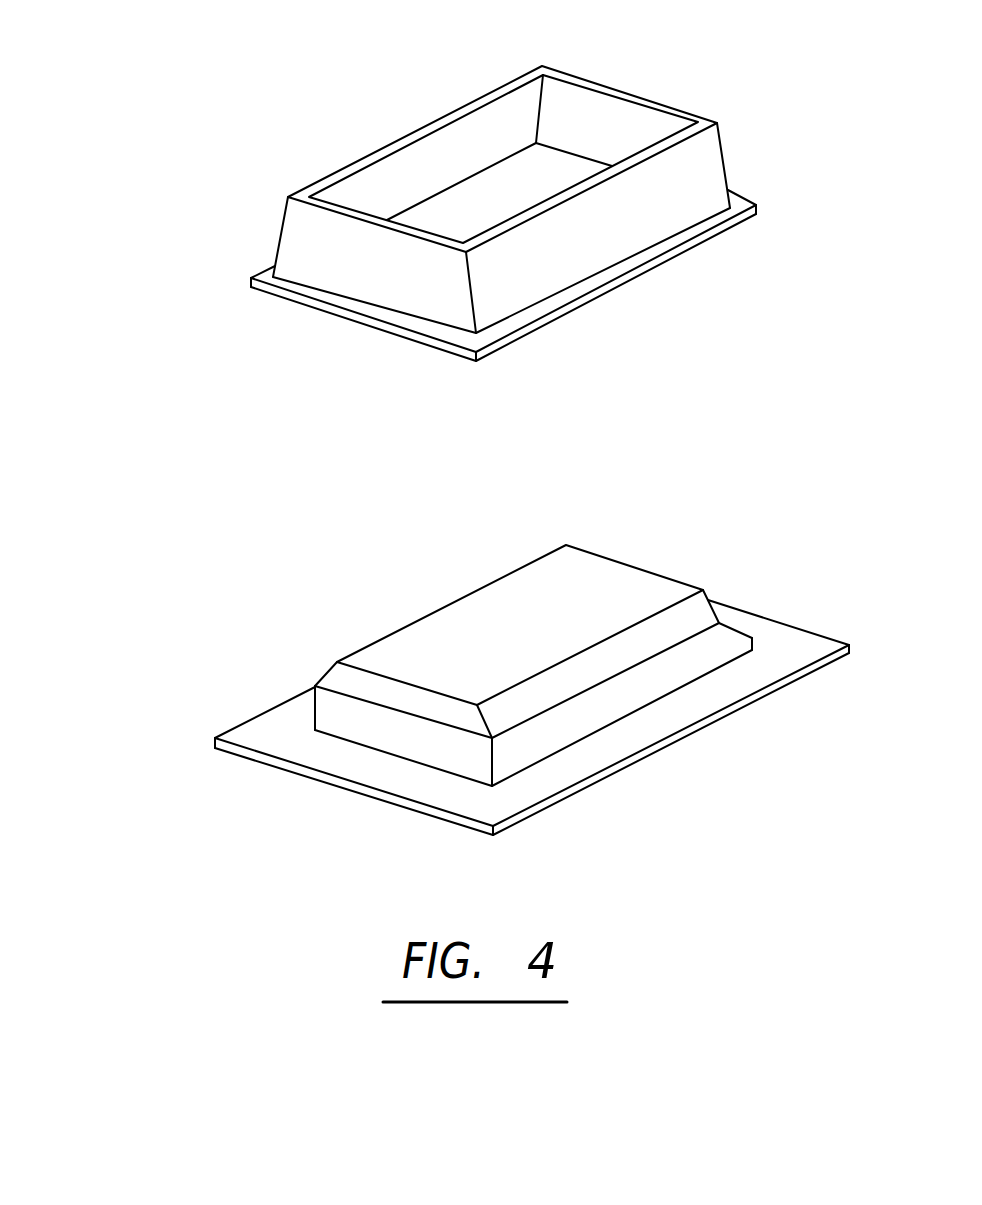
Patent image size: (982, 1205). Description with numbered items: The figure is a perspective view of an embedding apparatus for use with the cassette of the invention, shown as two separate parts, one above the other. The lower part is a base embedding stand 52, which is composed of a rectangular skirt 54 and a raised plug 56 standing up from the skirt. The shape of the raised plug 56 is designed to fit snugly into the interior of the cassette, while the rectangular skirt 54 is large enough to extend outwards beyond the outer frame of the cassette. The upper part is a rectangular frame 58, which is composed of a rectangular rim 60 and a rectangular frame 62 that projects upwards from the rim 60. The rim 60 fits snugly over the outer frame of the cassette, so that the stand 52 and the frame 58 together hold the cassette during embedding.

The base embedding stand 52 is at (152, 538).
The rectangular skirt 54 is at (712, 691).
The raised plug 56 is at (658, 590).
The rectangular frame 58 is at (132, 54).
The rectangular rim 60 is at (612, 283).
The rectangular frame 62 is at (685, 178).